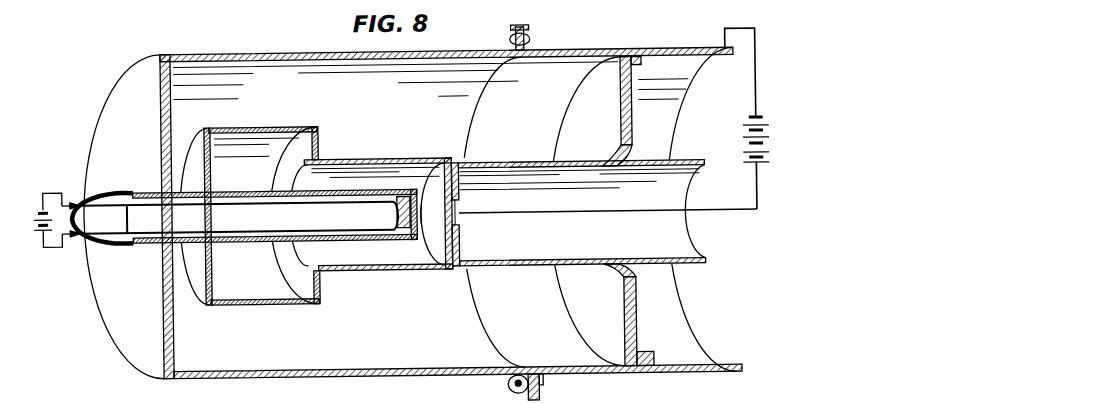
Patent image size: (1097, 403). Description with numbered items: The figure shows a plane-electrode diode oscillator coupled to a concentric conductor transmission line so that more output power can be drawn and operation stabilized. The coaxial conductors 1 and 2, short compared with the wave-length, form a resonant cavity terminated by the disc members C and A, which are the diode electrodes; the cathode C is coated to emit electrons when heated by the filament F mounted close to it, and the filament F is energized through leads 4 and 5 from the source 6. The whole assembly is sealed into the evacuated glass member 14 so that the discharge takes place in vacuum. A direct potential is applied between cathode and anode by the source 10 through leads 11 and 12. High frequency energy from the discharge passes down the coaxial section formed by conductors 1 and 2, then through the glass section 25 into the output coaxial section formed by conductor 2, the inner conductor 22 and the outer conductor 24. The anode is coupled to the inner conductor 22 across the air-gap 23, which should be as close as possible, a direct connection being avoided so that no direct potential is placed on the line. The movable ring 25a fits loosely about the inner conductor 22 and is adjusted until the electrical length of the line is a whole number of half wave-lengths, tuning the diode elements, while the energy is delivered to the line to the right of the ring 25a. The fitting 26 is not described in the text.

The outer conductor 24 is at (243, 57).
The glass section 25 is at (240, 131).
The movable ring 25a is at (556, 149).
The coaxial conductor 2 is at (363, 164).
The filament lead 5 is at (262, 208).
The filament lead 4 is at (218, 228).
The coaxial conductor 1 is at (335, 242).
The filament F is at (402, 230).
The evacuated glass member 14 is at (98, 190).
The filament source 6 is at (38, 233).
The anode disc A is at (445, 198).
The cathode disc C is at (421, 216).
The air-gap 23 is at (453, 270).
The inner conductor 22 is at (492, 268).
The lead 11 is at (580, 214).
The terminal fitting 26 is at (502, 56).
The lead 12 is at (757, 85).
The source 10 is at (750, 141).